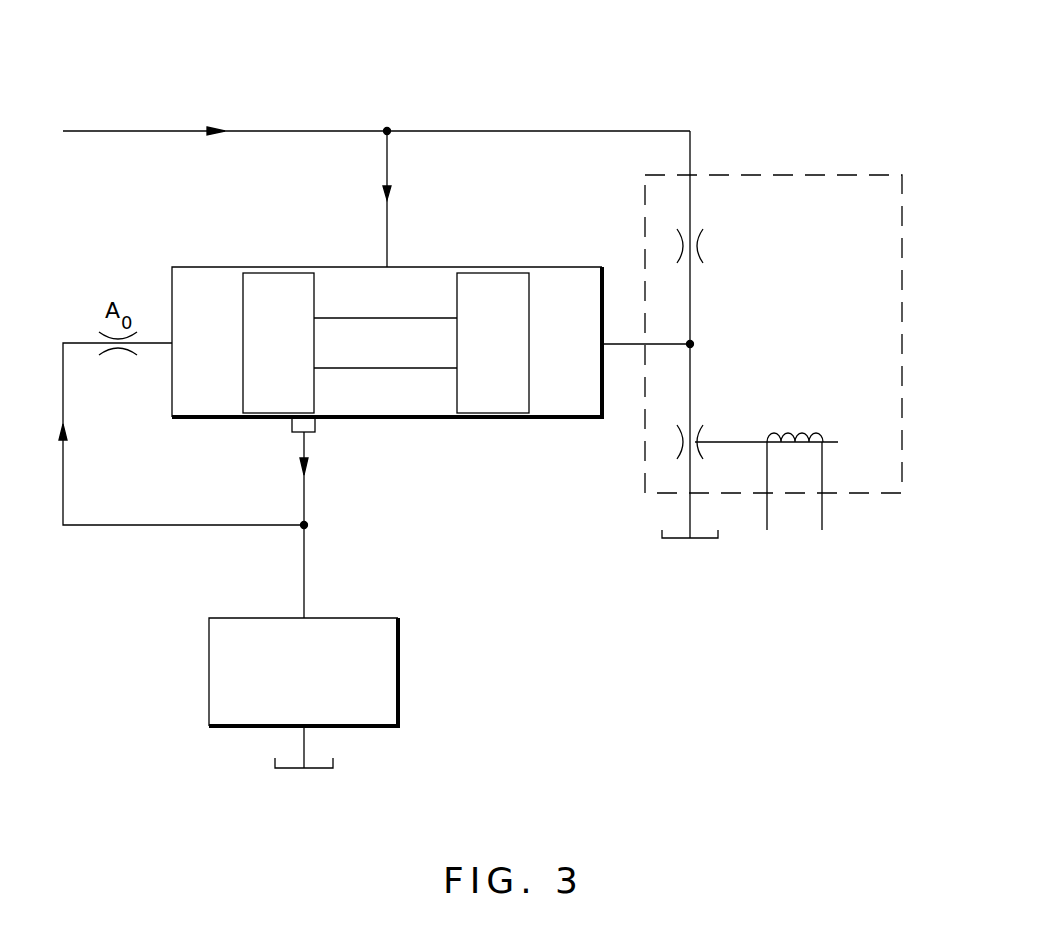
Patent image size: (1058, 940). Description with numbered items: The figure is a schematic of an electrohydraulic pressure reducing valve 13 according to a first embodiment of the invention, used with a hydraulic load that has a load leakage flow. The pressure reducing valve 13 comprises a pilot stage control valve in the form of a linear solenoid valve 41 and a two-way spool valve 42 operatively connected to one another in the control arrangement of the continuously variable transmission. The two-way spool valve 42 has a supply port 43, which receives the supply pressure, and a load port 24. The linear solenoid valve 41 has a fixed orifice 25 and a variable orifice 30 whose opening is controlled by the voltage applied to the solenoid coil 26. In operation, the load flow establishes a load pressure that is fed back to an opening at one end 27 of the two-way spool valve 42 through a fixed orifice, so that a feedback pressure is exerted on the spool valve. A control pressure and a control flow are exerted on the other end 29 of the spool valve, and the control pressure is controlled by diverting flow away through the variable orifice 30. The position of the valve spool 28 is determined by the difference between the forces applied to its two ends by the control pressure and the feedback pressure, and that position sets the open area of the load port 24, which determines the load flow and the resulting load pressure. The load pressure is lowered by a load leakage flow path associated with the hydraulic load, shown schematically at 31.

The pressure reducing valve 13 is at (553, 90).
The load port 24 is at (310, 428).
The first orifice A1 25 is at (692, 223).
The solenoid coil 26 is at (823, 503).
The one end of the two-way spool valve 27 is at (168, 283).
The valve spool 28 is at (347, 340).
The other end of the spool valve 29 is at (604, 399).
The opening 30 is at (692, 456).
The load leakage flow path 31 is at (305, 745).
The linear solenoid valve 41 is at (886, 253).
The two-way spool valve 42 is at (438, 420).
The supply port 43 is at (387, 267).